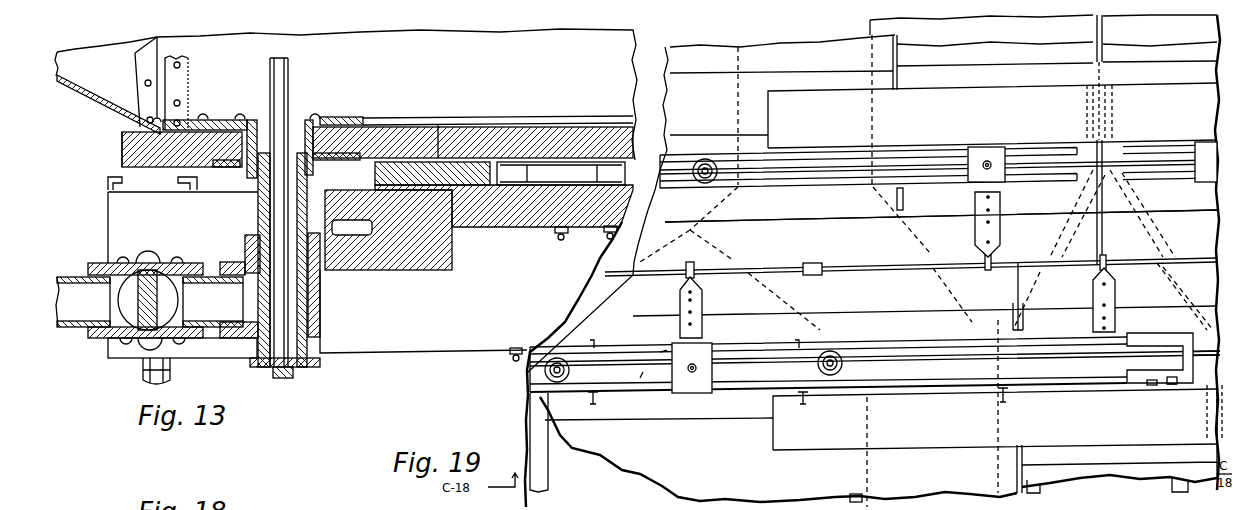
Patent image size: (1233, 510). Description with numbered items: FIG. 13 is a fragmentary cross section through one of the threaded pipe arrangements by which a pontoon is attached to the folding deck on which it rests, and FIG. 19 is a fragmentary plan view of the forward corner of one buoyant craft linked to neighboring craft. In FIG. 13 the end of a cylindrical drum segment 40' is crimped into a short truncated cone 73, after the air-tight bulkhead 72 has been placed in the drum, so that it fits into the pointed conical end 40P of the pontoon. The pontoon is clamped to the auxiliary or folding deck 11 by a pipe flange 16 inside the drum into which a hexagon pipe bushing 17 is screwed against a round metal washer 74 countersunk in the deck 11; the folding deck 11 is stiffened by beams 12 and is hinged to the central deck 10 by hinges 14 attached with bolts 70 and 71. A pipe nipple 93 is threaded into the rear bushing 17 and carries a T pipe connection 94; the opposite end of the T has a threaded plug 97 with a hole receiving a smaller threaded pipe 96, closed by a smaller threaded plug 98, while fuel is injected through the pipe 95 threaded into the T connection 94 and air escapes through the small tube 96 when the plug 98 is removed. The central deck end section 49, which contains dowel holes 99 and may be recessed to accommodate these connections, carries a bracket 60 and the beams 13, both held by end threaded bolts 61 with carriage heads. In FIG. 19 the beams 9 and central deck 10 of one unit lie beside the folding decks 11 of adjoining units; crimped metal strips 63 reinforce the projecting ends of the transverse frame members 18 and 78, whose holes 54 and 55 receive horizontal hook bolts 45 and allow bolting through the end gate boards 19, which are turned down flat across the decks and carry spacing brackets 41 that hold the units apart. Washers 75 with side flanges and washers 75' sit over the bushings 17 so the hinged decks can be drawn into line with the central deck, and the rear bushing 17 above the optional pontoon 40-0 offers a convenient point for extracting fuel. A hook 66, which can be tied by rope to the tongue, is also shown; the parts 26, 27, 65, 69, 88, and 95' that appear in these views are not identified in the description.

In FIG. 19, the beams 9 is at (858, 486).
In FIG. 13, the central deck 10 is at (504, 206).
In FIG. 19, the central deck 10 is at (806, 63).
In FIG. 13, the auxiliary or folding deck 11 is at (377, 141).
In FIG. 19, the auxiliary or folding deck 11 is at (1006, 81).
In FIG. 13, the beams 12 is at (130, 133).
In FIG. 19, the beams 12 is at (1116, 489).
In FIG. 13, the beams 13 is at (400, 301).
In FIG. 19, the beams 13 is at (1008, 497).
In FIG. 13, the hinges 14 is at (561, 173).
In FIG. 13, the pipe flange 16 is at (212, 120).
In FIG. 13, the pipe bushing 17 is at (279, 155).
In FIG. 19, the cross frame members 18 is at (1133, 169).
In FIG. 19, the end gate boards 19 is at (1206, 350).
In FIG. 19, the rail 26 is at (746, 356).
In FIG. 19, the bolt 27 is at (803, 299).
In FIG. 13, the pointed conical end 40P is at (103, 69).
In FIG. 13, the cylindrical drum segment 40' is at (346, 94).
In FIG. 19, the optional pontoon 40-0 is at (734, 46).
In FIG. 19, the brackets 41 is at (1122, 116).
In FIG. 19, the horizontal hook bolt 45 is at (694, 336).
In FIG. 13, the central deck end section 49 is at (202, 224).
In FIG. 19, the central deck end section 49 is at (789, 252).
In FIG. 19, the hole 54 is at (1012, 318).
In FIG. 19, the pivot hole 55 is at (1175, 386).
In FIG. 13, the bracket 60 is at (107, 181).
In FIG. 13, the end threaded bolt 61 is at (165, 190).
In FIG. 19, the crimped metal strips 63 is at (875, 268).
In FIG. 19, the hanger 65 is at (1045, 262).
In FIG. 19, the hook 66 is at (698, 311).
In FIG. 19, the rod 69 is at (618, 268).
In FIG. 13, the bolt 70 is at (555, 296).
In FIG. 13, the bolt 71 is at (562, 240).
In FIG. 13, the air-tight bulkhead 72 is at (182, 94).
In FIG. 13, the short truncated cone 73 is at (146, 82).
In FIG. 13, the round metal washer 74 is at (230, 166).
In FIG. 19, the washer 75 is at (693, 270).
In FIG. 19, the washer 75' is at (838, 270).
In FIG. 19, the cross frame members 78 is at (1168, 356).
In FIG. 13, the block 88 is at (432, 173).
In FIG. 13, the pipe nipple 93 is at (258, 228).
In FIG. 13, the T pipe connection 94 is at (340, 292).
In FIG. 13, the pipe 95 is at (173, 310).
In FIG. 13, the valve nut 95' is at (151, 293).
In FIG. 13, the small threaded pipe 96 is at (272, 90).
In FIG. 13, the threaded plug 97 is at (312, 360).
In FIG. 13, the smaller threaded plug 98 is at (292, 378).
In FIG. 13, the dowel holes 99 is at (352, 228).